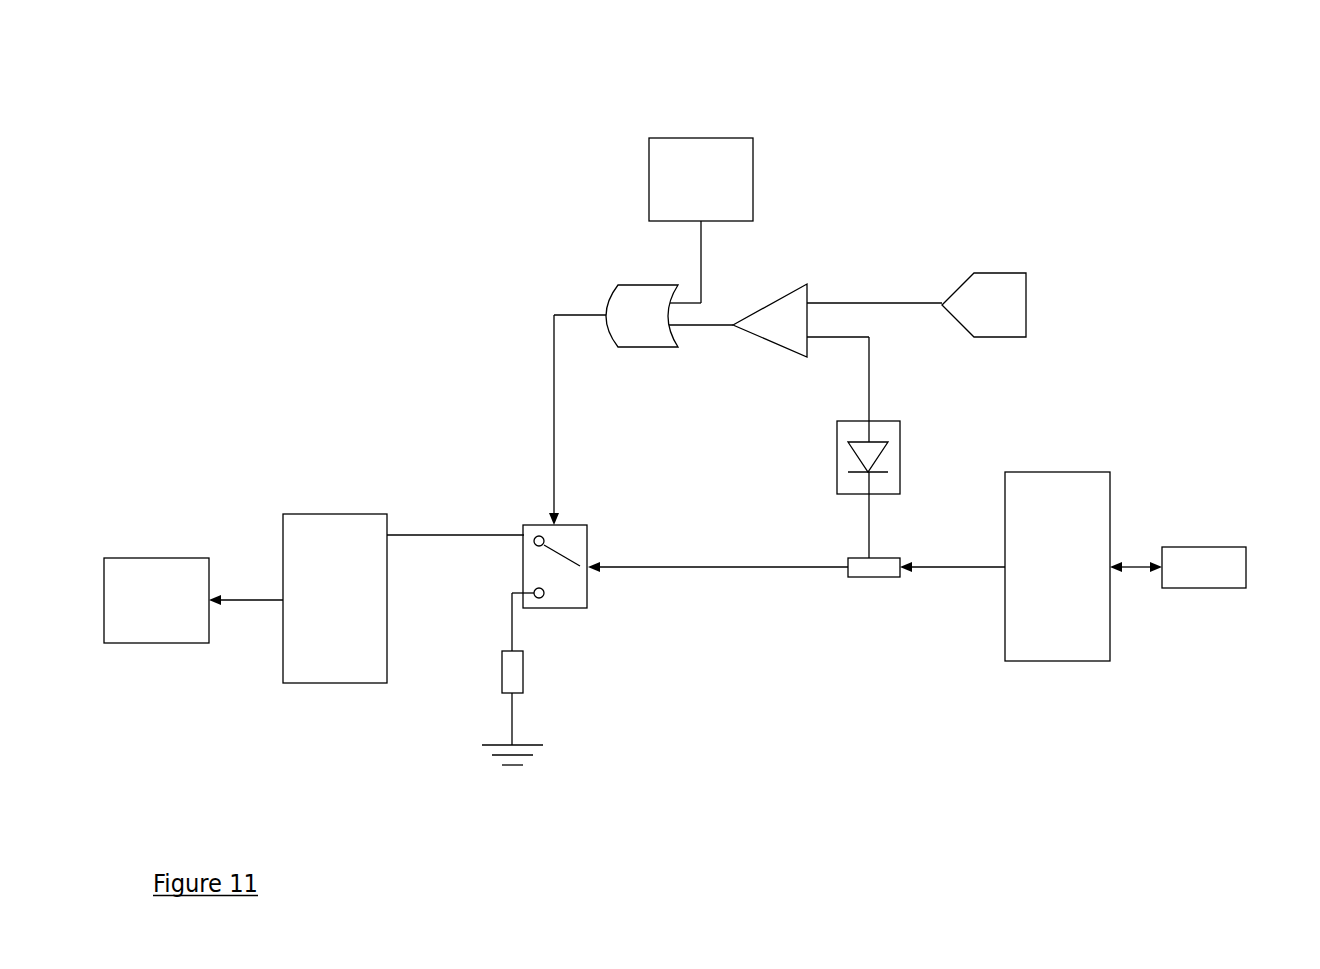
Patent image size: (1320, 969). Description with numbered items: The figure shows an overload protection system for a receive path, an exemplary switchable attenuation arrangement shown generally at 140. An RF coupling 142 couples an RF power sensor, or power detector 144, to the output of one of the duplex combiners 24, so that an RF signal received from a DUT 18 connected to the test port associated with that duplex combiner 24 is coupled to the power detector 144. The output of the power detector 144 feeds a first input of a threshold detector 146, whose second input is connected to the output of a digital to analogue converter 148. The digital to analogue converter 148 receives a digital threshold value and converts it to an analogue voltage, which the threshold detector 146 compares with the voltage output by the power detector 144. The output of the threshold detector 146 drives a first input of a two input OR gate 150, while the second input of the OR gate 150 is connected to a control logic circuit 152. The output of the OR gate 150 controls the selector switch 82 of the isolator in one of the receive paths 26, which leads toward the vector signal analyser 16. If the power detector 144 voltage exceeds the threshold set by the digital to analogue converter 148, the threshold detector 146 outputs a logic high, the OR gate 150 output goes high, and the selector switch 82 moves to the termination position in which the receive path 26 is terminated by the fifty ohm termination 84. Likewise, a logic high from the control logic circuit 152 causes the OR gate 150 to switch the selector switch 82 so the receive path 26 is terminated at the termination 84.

The switchable attenuation 140 is at (224, 136).
The control logic circuit 152 is at (732, 147).
The two input OR gate 150 is at (650, 336).
The threshold detector 146 is at (762, 327).
The digital to analogue converter 148 is at (1005, 325).
The RF power sensor 144 is at (890, 481).
The RF coupling 142 is at (869, 567).
The duplex combiner 24 is at (1013, 485).
The device under test 18 is at (1235, 577).
The receive path 26 is at (292, 535).
The vector signal analyser 16 is at (125, 631).
The selector switch 82 is at (576, 600).
The 50 ohm termination 84 is at (512, 682).